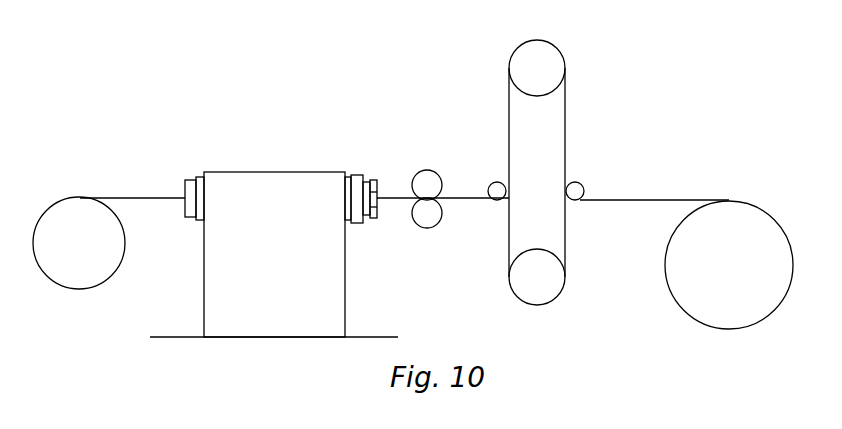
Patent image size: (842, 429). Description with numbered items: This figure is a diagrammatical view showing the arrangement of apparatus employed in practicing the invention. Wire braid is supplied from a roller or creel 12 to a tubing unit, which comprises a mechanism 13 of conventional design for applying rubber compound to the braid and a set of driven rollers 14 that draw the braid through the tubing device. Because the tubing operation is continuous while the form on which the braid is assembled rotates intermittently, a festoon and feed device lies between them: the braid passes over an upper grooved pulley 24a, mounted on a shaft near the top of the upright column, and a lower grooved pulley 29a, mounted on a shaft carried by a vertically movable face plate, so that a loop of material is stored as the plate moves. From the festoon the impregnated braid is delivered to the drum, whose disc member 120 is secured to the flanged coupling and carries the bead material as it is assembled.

The roller or creel 12 is at (80, 199).
The mechanism for applying rubber compound 13 is at (278, 176).
The set of driven rollers 14 is at (436, 208).
The pulley 24a is at (552, 63).
The pulley 29a is at (553, 288).
The disc member 120 is at (747, 212).